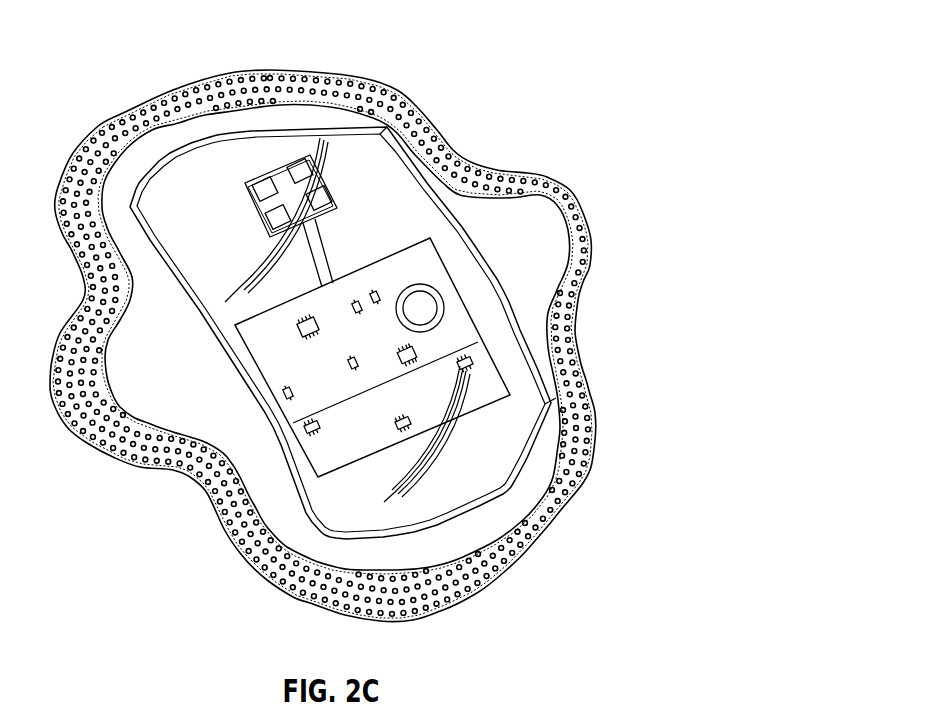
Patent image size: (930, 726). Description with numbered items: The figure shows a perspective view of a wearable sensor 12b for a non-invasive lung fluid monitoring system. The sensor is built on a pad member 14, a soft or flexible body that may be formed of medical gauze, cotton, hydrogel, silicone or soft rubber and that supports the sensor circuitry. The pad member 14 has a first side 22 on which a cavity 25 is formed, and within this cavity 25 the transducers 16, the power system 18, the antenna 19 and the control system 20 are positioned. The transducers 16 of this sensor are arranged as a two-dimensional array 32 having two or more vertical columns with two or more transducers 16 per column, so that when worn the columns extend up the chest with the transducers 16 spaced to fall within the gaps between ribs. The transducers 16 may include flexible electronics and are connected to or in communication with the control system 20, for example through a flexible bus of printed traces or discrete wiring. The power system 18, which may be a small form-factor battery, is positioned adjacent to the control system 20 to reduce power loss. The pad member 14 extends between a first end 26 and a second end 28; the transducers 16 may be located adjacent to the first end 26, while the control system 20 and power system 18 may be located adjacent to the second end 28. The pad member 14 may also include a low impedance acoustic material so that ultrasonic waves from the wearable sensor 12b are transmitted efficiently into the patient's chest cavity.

The wearable sensor 12b is at (434, 98).
The pad member 14 is at (398, 560).
The transducers 16 is at (305, 172).
The power system 18 is at (317, 450).
The antenna 19 is at (418, 303).
The control system 20 is at (266, 337).
The first side 22 is at (521, 212).
The cavity 25 is at (325, 127).
The first end 26 is at (268, 64).
The second end 28 is at (455, 568).
The two-dimensional array 32 is at (251, 150).